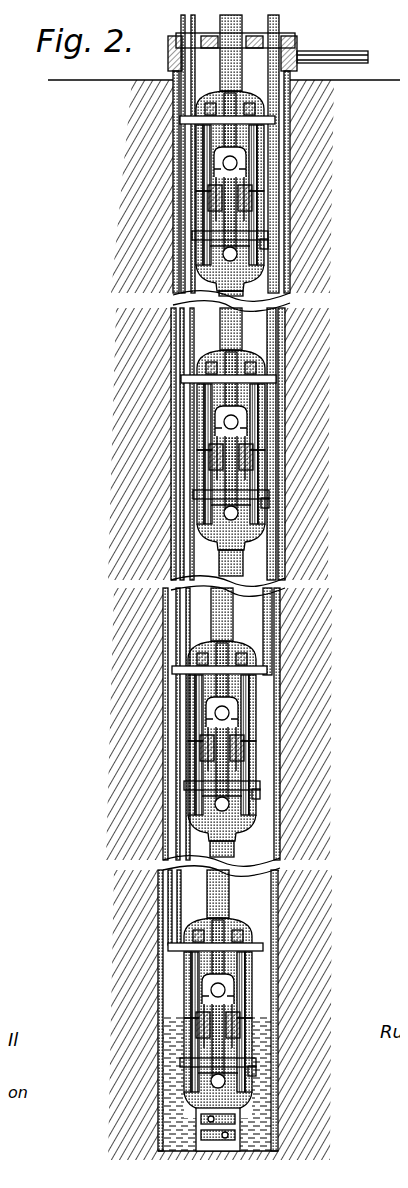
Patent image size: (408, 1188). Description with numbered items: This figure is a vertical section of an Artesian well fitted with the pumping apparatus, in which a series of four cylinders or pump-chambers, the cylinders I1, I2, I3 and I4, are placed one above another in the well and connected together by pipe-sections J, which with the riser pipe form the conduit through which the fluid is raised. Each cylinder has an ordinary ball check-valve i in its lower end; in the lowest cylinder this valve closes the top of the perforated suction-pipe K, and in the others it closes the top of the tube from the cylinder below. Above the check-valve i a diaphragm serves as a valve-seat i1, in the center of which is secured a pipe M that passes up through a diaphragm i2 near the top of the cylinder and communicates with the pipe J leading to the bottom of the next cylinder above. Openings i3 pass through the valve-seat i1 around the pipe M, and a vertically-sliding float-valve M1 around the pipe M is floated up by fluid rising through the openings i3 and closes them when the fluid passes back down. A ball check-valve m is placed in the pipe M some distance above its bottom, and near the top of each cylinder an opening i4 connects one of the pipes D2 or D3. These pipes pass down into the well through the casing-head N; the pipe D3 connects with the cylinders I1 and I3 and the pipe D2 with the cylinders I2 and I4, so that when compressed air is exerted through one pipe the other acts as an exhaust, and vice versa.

The pipe D3 is at (172, 14).
The pipe D2 is at (277, 17).
The casing-head N is at (155, 40).
The pipe-section J is at (244, 58).
The cylinder I4 is at (252, 180).
The cylinder I3 is at (248, 433).
The cylinder I2 is at (247, 730).
The cylinder I1 is at (243, 977).
The pipe M is at (210, 128).
The float-valve M1 is at (197, 192).
The ball check-valve m is at (213, 163).
The diaphragm i2 is at (197, 107).
The opening i4 is at (252, 115).
The ball check-valve i is at (210, 248).
The valve-seat i1 is at (190, 227).
The openings i3 is at (257, 240).
The perforated suction-pipe K is at (240, 1098).